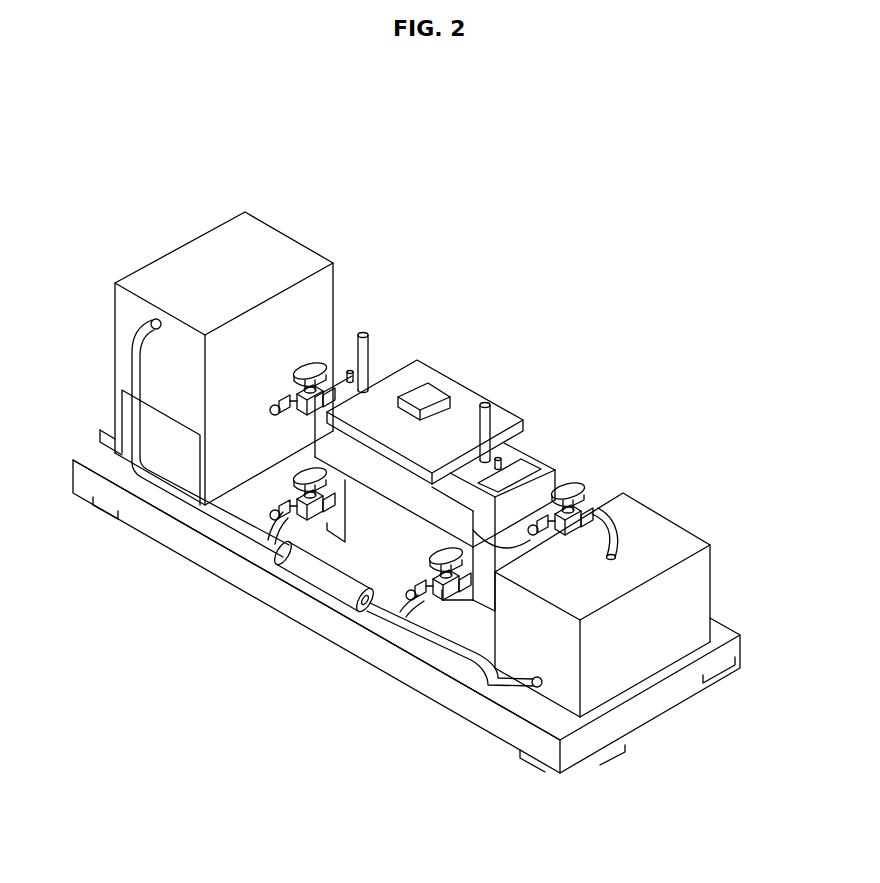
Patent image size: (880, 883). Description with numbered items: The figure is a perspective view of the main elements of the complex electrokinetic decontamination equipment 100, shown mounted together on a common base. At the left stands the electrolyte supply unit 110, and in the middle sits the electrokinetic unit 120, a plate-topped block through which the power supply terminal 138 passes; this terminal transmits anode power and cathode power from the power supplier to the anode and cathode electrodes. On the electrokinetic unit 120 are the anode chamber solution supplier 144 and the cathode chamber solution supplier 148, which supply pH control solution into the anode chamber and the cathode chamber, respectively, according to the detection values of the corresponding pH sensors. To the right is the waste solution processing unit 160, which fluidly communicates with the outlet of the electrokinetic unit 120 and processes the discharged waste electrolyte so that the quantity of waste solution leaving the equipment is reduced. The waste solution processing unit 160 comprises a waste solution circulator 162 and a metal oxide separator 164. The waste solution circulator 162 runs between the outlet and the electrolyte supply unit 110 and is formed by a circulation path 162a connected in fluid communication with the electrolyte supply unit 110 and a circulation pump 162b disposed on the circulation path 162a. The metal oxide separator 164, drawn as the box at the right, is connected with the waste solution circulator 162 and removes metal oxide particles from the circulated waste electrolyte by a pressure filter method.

The complex electrokinetic decontamination equipment 100 is at (561, 171).
The electrolyte supply unit 110 is at (303, 226).
The electrokinetic unit 120 is at (458, 375).
The power supply terminal 138 is at (369, 335).
The anode chamber solution supplier 144 is at (350, 371).
The cathode chamber solution supplier 148 is at (505, 461).
The waste solution processing unit 160 is at (650, 496).
The metal oxide separator 164 is at (700, 570).
The waste solution circulator 162 is at (362, 737).
The circulation path 162a is at (421, 638).
The circulation pump 162b is at (325, 589).